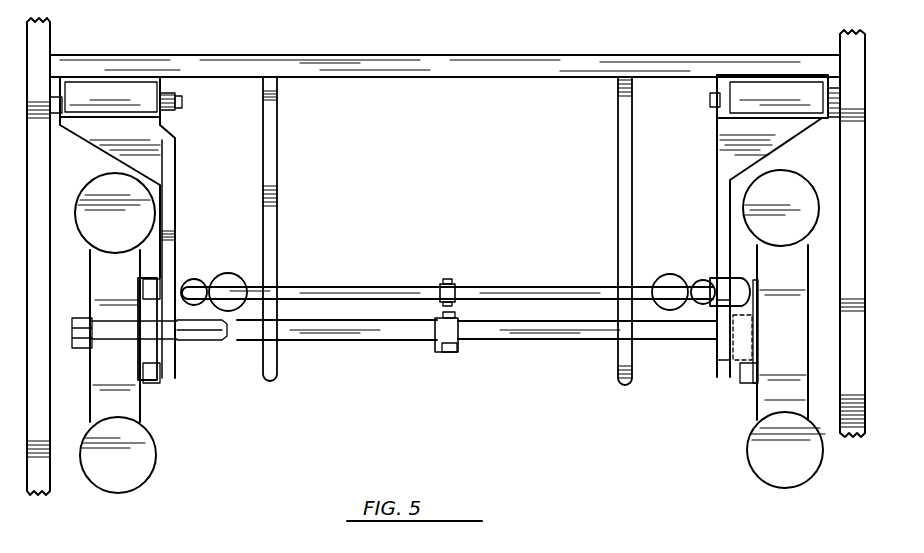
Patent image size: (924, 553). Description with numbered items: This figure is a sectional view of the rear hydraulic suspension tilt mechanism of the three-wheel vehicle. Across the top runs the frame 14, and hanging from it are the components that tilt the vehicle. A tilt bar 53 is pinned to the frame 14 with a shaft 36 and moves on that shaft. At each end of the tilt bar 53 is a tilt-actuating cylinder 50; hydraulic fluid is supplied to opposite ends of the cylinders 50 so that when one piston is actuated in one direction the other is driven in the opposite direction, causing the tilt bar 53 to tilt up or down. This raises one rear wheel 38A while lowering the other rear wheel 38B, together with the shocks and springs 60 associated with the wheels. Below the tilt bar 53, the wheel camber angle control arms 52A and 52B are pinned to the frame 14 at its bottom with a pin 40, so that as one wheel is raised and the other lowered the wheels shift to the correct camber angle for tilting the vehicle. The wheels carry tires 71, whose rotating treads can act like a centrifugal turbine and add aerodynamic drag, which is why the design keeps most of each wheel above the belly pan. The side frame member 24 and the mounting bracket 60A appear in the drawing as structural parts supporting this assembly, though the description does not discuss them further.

The frame 14 is at (353, 59).
The frame side member 24 is at (42, 389).
The shaft 36 is at (440, 280).
The rear wheel 38A is at (128, 395).
The rear wheel 38B is at (768, 392).
The pin 40 is at (452, 352).
The tilt-actuating cylinder 50 is at (218, 282).
The wheel camber angle control arm 52A is at (378, 340).
The wheel camber angle control arm 52B is at (587, 340).
The tilt bar 53 is at (345, 280).
The shocks and springs 60 is at (187, 277).
The mounting bracket 60A is at (168, 207).
The tire 71 is at (143, 457).